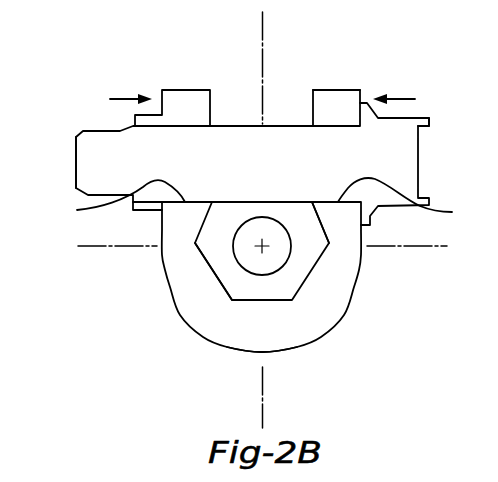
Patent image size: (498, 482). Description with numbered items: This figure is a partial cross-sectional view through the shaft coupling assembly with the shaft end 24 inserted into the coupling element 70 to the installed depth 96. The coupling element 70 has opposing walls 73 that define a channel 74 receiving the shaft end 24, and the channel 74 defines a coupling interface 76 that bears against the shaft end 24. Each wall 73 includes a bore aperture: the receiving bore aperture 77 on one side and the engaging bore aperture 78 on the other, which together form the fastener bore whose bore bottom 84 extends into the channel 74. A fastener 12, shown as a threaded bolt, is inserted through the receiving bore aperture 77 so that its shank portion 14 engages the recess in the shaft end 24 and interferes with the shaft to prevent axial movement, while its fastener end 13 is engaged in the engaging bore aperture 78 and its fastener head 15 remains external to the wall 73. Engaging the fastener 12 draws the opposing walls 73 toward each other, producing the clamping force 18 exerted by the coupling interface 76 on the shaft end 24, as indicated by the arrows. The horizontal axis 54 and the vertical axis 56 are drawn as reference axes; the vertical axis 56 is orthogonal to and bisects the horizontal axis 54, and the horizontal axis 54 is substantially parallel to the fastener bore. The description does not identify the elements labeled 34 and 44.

The fastener 12 is at (446, 176).
The fastener end 13 is at (76, 165).
The shank portion 14 is at (238, 126).
The fastener head 15 is at (420, 138).
The clamping force 18 is at (115, 99).
The shaft end 24 is at (187, 278).
The aperture 34 is at (205, 228).
The nut side wall 44 is at (321, 232).
The shaft horizontal axis 54 is at (430, 246).
The vertical axis 56 is at (262, 29).
The coupling element 70 is at (334, 356).
The opposing walls 73 is at (343, 301).
The channel 74 is at (309, 60).
The coupling interface 76 is at (222, 280).
The receiving bore aperture 77 is at (333, 127).
The engaging bore aperture 78 is at (190, 122).
The bore bottom 84 is at (263, 201).
The installed depth 96 is at (104, 5).